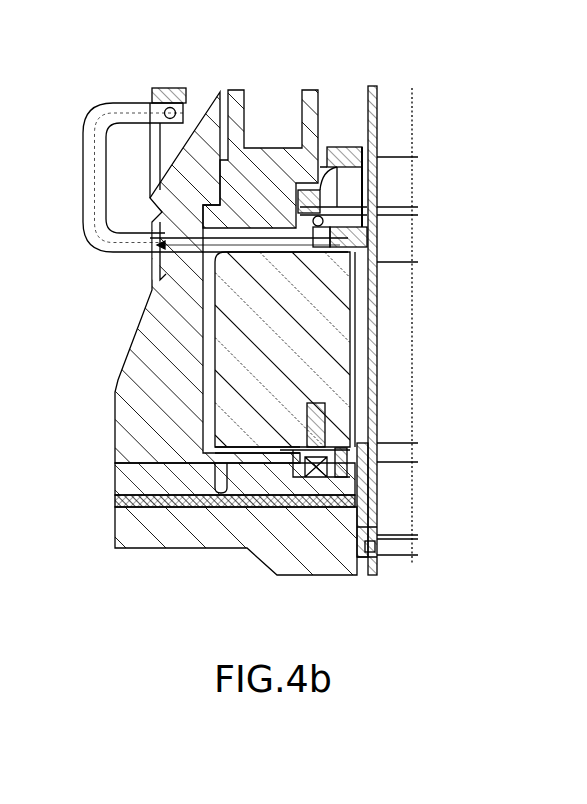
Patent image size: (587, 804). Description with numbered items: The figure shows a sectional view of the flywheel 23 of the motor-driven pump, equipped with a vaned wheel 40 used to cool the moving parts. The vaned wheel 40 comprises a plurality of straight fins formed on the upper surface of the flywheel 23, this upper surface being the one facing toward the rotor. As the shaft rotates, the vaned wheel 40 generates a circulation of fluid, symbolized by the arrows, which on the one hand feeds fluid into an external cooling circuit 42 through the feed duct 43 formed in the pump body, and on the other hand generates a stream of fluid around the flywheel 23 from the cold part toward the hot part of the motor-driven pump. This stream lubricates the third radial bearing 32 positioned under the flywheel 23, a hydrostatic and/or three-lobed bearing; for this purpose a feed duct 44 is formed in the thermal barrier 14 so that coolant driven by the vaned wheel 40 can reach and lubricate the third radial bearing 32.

The thermal barrier 14 is at (153, 533).
The flywheel 23 is at (322, 375).
The third radial bearing 32 is at (360, 520).
The vaned wheel 40 is at (300, 252).
The external cooling circuit 42 is at (104, 110).
The feed duct 43 is at (143, 258).
The feed duct 44 is at (250, 503).